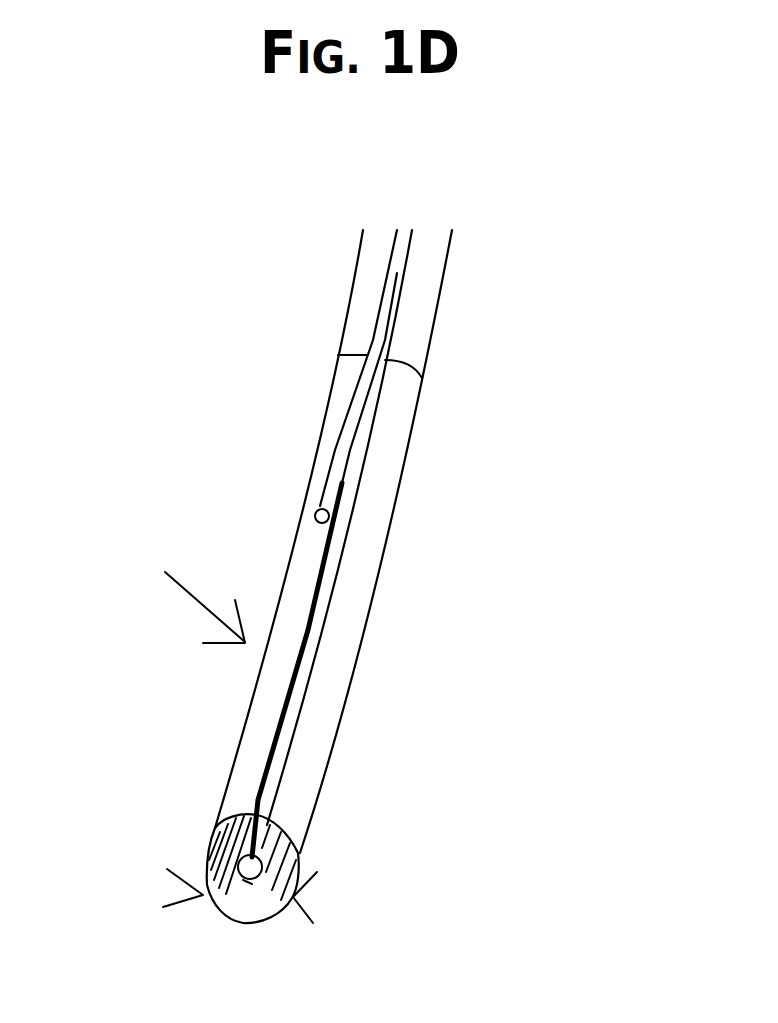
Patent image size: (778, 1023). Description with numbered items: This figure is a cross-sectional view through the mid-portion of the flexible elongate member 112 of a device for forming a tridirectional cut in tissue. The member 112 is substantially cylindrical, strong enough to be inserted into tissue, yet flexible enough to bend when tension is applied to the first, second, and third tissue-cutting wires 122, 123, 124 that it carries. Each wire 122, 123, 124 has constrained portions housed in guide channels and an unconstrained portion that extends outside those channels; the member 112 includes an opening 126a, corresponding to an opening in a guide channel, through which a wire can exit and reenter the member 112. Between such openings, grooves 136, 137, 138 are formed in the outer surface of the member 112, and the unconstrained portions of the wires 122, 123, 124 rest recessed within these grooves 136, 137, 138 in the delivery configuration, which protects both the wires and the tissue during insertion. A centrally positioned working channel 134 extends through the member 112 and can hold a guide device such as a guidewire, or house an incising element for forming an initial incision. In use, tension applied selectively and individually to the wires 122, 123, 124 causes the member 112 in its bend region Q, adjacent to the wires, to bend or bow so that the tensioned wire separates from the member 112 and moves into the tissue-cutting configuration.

The flexible elongate member 112 is at (420, 393).
The first tissue-cutting wire 122 is at (318, 506).
The second tissue-cutting wire 123 is at (293, 867).
The third tissue-cutting wire 124 is at (207, 876).
The opening 126a is at (397, 273).
The working channel 134 is at (215, 830).
The groove 136 is at (337, 611).
The groove 137 is at (293, 897).
The groove 138 is at (203, 895).
The bend region Q is at (187, 593).